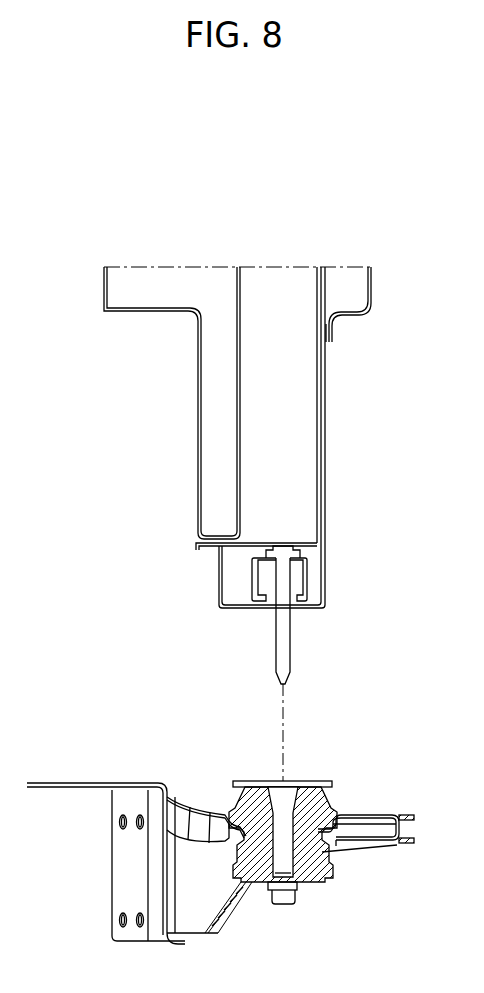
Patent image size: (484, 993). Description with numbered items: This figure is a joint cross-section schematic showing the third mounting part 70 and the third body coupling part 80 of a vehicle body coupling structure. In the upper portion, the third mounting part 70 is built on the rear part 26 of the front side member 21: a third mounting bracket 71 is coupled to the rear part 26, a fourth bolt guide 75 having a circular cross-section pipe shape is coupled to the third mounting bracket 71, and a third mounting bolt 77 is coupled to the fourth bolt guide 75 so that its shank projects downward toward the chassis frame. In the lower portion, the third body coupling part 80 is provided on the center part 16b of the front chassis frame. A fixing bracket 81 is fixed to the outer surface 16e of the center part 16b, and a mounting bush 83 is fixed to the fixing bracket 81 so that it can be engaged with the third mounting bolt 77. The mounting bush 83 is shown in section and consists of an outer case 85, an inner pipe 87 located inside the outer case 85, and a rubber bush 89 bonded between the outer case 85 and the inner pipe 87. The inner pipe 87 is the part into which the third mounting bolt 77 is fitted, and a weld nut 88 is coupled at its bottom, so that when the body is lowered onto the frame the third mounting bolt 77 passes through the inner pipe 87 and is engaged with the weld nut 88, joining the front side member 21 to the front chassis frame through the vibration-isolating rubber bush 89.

The center part 16b is at (100, 890).
The outer surface 16e is at (165, 858).
The front side member 21 is at (339, 587).
The rear part 26 is at (326, 568).
The third mounting part 70 is at (240, 567).
The third mounting bracket 71 is at (251, 590).
The fourth bolt guide 75 is at (297, 591).
The third mounting bolt 77 is at (280, 630).
The third body coupling part 80 is at (349, 762).
The fixing bracket 81 is at (184, 795).
The mounting bush 83 is at (336, 862).
The outer case 85 is at (222, 798).
The inner pipe 87 is at (331, 815).
The weld nut 88 is at (289, 905).
The rubber bush 89 is at (312, 870).